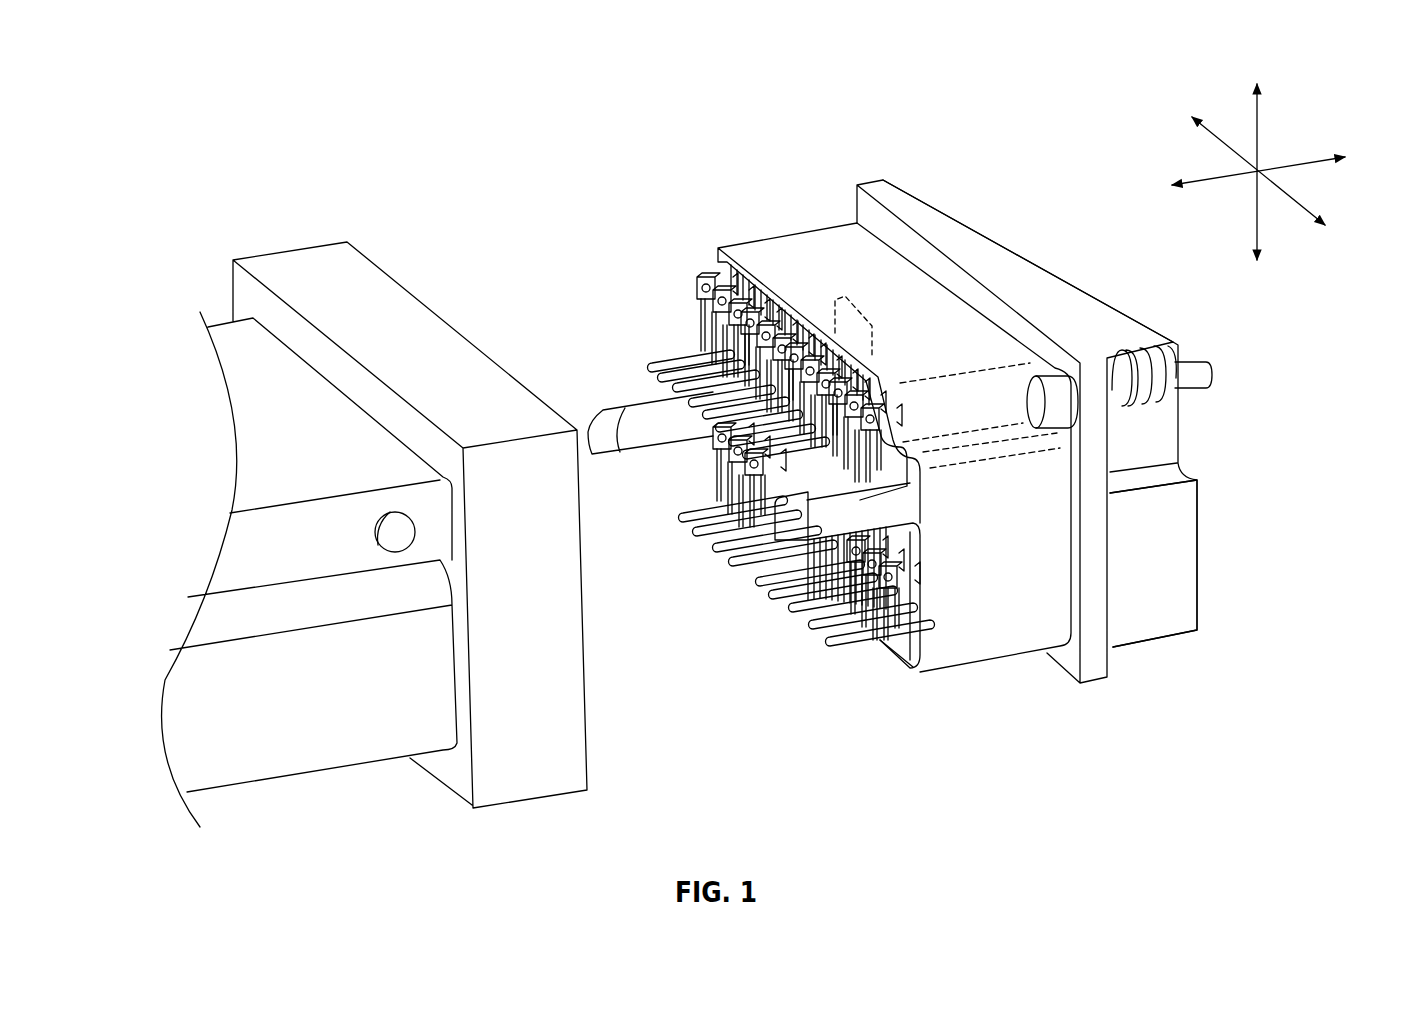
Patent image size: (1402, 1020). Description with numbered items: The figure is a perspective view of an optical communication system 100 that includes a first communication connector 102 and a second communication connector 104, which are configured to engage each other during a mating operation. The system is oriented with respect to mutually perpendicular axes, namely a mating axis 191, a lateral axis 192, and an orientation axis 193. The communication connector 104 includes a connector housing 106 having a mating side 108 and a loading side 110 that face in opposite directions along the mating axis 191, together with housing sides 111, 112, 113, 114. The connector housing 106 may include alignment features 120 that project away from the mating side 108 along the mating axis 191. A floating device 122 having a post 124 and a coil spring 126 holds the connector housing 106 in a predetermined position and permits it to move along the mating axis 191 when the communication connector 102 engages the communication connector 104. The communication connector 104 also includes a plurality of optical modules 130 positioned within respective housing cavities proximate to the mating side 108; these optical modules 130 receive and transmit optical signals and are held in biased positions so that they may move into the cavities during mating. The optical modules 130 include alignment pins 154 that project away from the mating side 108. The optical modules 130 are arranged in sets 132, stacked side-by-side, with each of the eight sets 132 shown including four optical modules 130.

The optical communication system 100 is at (320, 90).
The first communication connector 102 is at (343, 193).
The second communication connector 104 is at (948, 126).
The connector housing 106 is at (830, 255).
The mating side 108 is at (648, 342).
The loading side 110 is at (1274, 456).
The housing side 111 is at (1090, 303).
The housing side 112 is at (748, 216).
The housing side 113 is at (965, 688).
The housing side 114 is at (1170, 563).
The alignment feature 120 is at (632, 470).
The floating device 122 is at (1148, 428).
The post 124 is at (1190, 354).
The coil spring 126 is at (1165, 340).
The optical module 130 is at (708, 275).
The set 132 is at (860, 296).
The alignment pin 154 is at (685, 355).
The mating axis 191 is at (1300, 158).
The lateral axis 192 is at (1218, 138).
The orientation axis 193 is at (1248, 192).